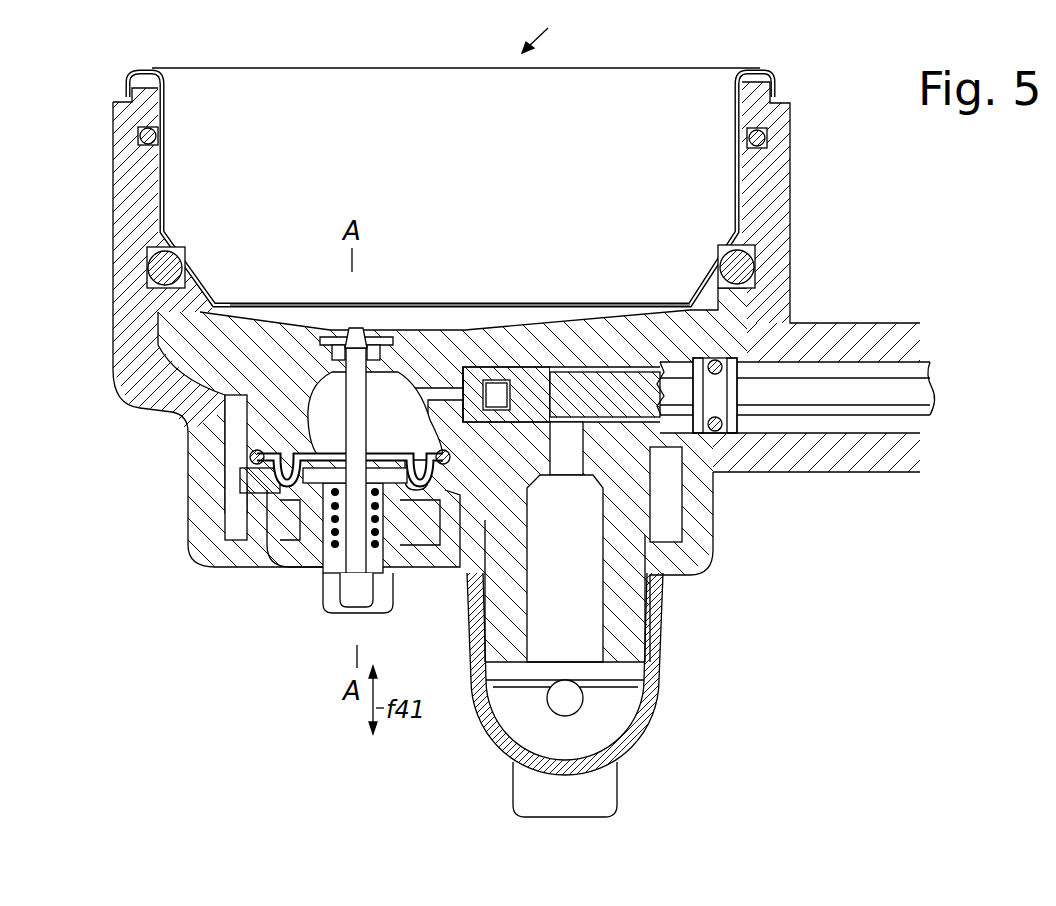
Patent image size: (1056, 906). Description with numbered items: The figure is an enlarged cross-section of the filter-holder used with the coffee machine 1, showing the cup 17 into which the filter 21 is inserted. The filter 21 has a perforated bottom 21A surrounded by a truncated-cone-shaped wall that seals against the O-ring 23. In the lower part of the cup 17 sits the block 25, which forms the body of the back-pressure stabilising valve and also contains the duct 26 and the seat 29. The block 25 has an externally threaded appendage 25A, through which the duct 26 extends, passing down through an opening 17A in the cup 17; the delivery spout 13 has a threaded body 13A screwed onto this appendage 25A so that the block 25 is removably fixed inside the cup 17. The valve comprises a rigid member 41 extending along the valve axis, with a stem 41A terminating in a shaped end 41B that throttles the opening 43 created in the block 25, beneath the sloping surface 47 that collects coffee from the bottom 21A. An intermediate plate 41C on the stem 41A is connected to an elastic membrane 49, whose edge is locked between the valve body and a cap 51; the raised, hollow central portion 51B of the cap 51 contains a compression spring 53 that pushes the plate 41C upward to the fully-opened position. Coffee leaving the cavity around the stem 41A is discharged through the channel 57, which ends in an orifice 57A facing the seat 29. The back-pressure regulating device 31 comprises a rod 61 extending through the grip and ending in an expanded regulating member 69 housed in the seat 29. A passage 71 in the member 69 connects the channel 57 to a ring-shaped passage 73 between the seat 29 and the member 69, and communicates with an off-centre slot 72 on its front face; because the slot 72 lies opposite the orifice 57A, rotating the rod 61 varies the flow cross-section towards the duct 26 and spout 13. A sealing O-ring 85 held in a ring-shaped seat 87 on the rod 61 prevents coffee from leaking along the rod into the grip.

The machine 1 is at (545, 28).
The delivery spout 13 is at (573, 703).
The threaded body 13A is at (640, 666).
The cup 17 is at (122, 216).
The opening 17A is at (690, 566).
The filter 21 is at (210, 100).
The perforated bottom 21A is at (262, 312).
The O-ring 23 is at (148, 268).
The block 25 is at (165, 345).
The externally threaded appendage 25A is at (625, 608).
The duct 26 is at (581, 596).
The seat 29 is at (612, 340).
The back-pressure regulating device 31 is at (862, 362).
The rigid member 41 is at (352, 585).
The stem 41A is at (396, 605).
The shaped end 41B is at (350, 332).
The plate 41C is at (365, 416).
The opening 43 is at (340, 365).
The sloping surface 47 is at (482, 330).
The elastic membrane 49 is at (268, 455).
The cap 51 is at (455, 575).
The raised central portion 51B is at (300, 585).
The compression spring 53 is at (300, 560).
The channel 57 is at (344, 425).
The orifice 57A is at (437, 330).
The rod 61 is at (930, 380).
The regulating member 69 is at (551, 448).
The passage 71 is at (503, 382).
The slot 72 is at (454, 439).
The ring-shaped passage 73 is at (518, 380).
The sealing O-ring 85 is at (745, 325).
The ring-shaped seat 87 is at (715, 472).